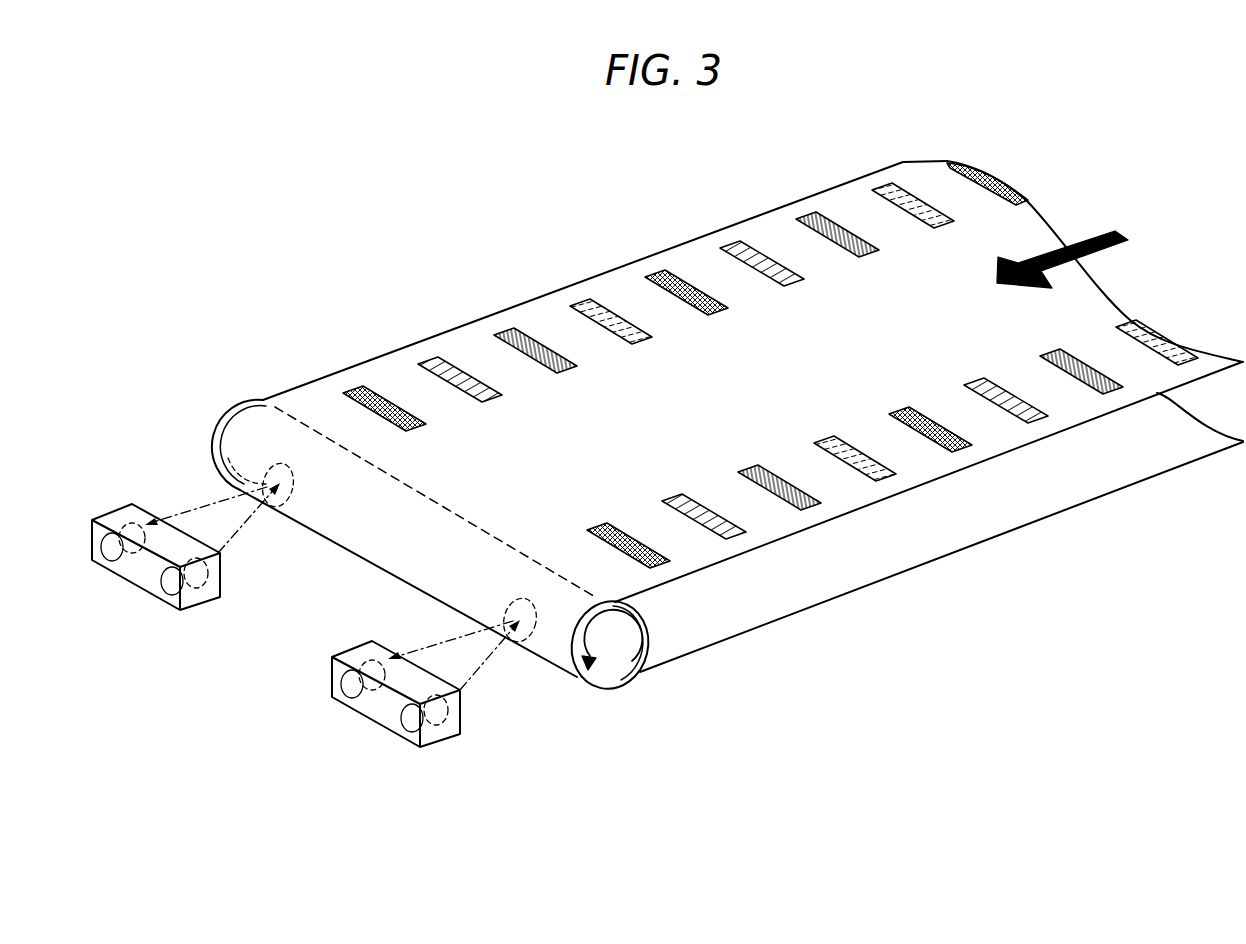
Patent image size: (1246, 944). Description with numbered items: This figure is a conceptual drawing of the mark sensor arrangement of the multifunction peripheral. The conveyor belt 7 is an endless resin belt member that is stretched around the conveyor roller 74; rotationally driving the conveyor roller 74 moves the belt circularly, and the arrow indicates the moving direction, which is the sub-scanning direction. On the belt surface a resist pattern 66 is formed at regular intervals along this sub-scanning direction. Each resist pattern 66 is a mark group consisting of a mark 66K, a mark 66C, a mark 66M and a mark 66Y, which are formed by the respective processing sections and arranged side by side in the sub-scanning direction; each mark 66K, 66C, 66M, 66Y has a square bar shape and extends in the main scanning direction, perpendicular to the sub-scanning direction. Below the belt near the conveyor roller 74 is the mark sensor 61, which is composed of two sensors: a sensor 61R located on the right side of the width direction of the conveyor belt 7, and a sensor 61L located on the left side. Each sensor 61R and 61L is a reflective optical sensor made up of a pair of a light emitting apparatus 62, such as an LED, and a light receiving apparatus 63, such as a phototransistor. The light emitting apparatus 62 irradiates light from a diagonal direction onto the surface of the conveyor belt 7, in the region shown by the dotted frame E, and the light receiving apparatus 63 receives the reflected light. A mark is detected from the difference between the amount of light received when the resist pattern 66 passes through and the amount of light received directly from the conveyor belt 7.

The conveyor belt 7 is at (508, 320).
The resist pattern 66 is at (762, 420).
The mark 66K is at (368, 388).
The mark 66C is at (745, 528).
The mark 66M is at (823, 497).
The mark 66Y is at (884, 395).
The conveyor roller 74 is at (607, 675).
The mark sensor 61 is at (276, 625).
The sensor 61R is at (197, 607).
The sensor 61L is at (333, 665).
The light emitting apparatus 62 is at (164, 593).
The light receiving apparatus 63 is at (101, 566).
The dotted frame E is at (220, 444).